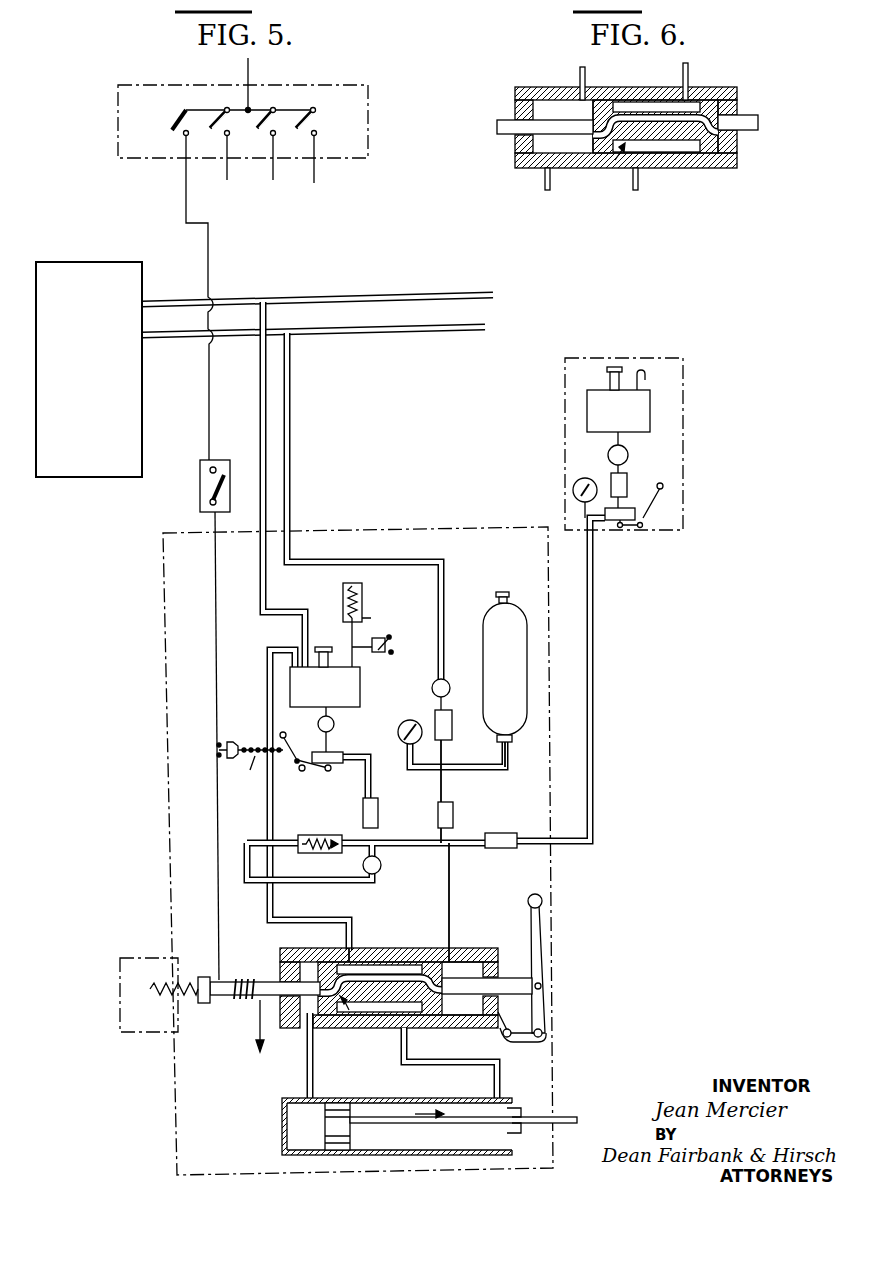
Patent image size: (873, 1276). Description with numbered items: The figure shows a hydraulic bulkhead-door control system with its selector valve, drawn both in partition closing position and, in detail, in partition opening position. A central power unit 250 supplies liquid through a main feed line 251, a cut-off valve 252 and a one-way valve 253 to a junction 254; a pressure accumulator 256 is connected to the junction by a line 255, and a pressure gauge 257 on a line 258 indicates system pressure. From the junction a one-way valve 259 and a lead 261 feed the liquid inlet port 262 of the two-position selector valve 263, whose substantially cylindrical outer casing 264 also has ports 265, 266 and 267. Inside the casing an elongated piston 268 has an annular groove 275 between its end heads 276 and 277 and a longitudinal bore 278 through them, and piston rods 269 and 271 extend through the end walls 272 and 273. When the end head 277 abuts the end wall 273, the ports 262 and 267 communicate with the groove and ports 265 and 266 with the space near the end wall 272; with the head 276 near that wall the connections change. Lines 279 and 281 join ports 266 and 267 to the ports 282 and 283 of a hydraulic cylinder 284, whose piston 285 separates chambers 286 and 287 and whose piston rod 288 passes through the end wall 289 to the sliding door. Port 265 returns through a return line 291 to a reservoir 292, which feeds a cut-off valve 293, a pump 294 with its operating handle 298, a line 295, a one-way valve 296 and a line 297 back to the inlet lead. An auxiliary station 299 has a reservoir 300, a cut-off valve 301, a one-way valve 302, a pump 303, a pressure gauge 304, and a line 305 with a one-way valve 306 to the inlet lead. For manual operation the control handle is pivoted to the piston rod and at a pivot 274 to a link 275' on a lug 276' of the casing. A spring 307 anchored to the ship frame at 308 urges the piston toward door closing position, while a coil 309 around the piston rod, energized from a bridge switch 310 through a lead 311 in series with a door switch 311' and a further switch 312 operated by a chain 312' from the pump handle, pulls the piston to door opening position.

In FIG. 5, the central power unit 250 is at (83, 481).
In FIG. 5, the main feed line 251 is at (174, 338).
In FIG. 5, the cut-off valve 252 is at (449, 680).
In FIG. 5, the one-way valve 253 is at (453, 746).
In FIG. 5, the junction 254 is at (451, 775).
In FIG. 5, the line 255 is at (505, 772).
In FIG. 5, the pressure accumulator 256 is at (511, 612).
In FIG. 5, the pressure gauge 257 is at (408, 720).
In FIG. 5, the line 258 is at (406, 766).
In FIG. 5, the one-way valve 259 is at (454, 818).
In FIG. 5, the lead 261 is at (447, 886).
In FIG. 6, the lead 261 is at (690, 68).
In FIG. 5, the liquid inlet port 262 is at (452, 956).
In FIG. 6, the liquid inlet port 262 is at (696, 88).
In FIG. 5, the selector valve 263 is at (441, 958).
In FIG. 6, the selector valve 263 is at (742, 85).
In FIG. 5, the outer casing 264 is at (480, 958).
In FIG. 6, the outer casing 264 is at (699, 162).
In FIG. 5, the port 265 is at (351, 940).
In FIG. 6, the port 265 is at (579, 88).
In FIG. 5, the port 266 is at (306, 1036).
In FIG. 6, the port 266 is at (553, 172).
In FIG. 5, the port 267 is at (402, 1030).
In FIG. 6, the port 267 is at (638, 172).
In FIG. 5, the piston 268 is at (346, 1016).
In FIG. 6, the piston 268 is at (618, 170).
In FIG. 5, the piston rod 269 is at (258, 980).
In FIG. 6, the piston rod 269 is at (506, 119).
In FIG. 5, the piston rod 271 is at (520, 983).
In FIG. 6, the piston rod 271 is at (759, 122).
In FIG. 5, the end wall 272 is at (545, 937).
In FIG. 6, the end wall 272 is at (516, 156).
In FIG. 5, the end wall 273 is at (545, 986).
In FIG. 6, the end wall 273 is at (739, 146).
In FIG. 5, the pivot 274 is at (548, 1036).
In FIG. 5, the annular groove 275 is at (380, 951).
In FIG. 6, the annular groove 275 is at (655, 95).
In FIG. 5, the link 275' is at (527, 1062).
In FIG. 5, the end head 276 is at (370, 971).
In FIG. 6, the end head 276 is at (655, 104).
In FIG. 5, the lug 276' is at (479, 1052).
In FIG. 5, the end head 277 is at (440, 1029).
In FIG. 6, the end head 277 is at (727, 163).
In FIG. 5, the longitudinal bore 278 is at (381, 965).
In FIG. 5, the line 279 is at (307, 1073).
In FIG. 6, the line 279 is at (543, 187).
In FIG. 5, the line 281 is at (401, 1075).
In FIG. 6, the line 281 is at (636, 193).
In FIG. 5, the port 282 is at (306, 1096).
In FIG. 5, the port 283 is at (500, 1098).
In FIG. 5, the hydraulic cylinder 284 is at (405, 1098).
In FIG. 5, the piston 285 is at (335, 1152).
In FIG. 5, the chamber 286 is at (296, 1126).
In FIG. 5, the chamber 287 is at (403, 1142).
In FIG. 5, the piston rod 288 is at (572, 1118).
In FIG. 5, the end wall 289 is at (513, 1152).
In FIG. 5, the return line 291 is at (274, 812).
In FIG. 5, the reservoir 292 is at (362, 680).
In FIG. 5, the cut-off valve 293 is at (335, 725).
In FIG. 5, the pump 294 is at (335, 765).
In FIG. 5, the line 295 is at (371, 784).
In FIG. 5, the one-way valve 296 is at (379, 816).
In FIG. 5, the line 297 is at (410, 846).
In FIG. 5, the operating handle 298 is at (280, 732).
In FIG. 5, the auxiliary station 299 is at (567, 381).
In FIG. 5, the reservoir 300 is at (587, 415).
In FIG. 5, the cut-off valve 301 is at (628, 455).
In FIG. 5, the one-way valve 302 is at (627, 486).
In FIG. 5, the pump 303 is at (613, 522).
In FIG. 5, the pressure gauge 304 is at (573, 491).
In FIG. 5, the line 305 is at (594, 650).
In FIG. 5, the one-way valve 306 is at (500, 849).
In FIG. 5, the spring 307 is at (200, 977).
In FIG. 5, the frame of the ship 308 is at (150, 990).
In FIG. 5, the coil 309 is at (236, 1000).
In FIG. 5, the switch 310 is at (176, 129).
In FIG. 5, the lead 311 is at (189, 558).
In FIG. 5, the switch 311' is at (189, 486).
In FIG. 5, the switch 312 is at (229, 755).
In FIG. 5, the chain 312' is at (250, 778).